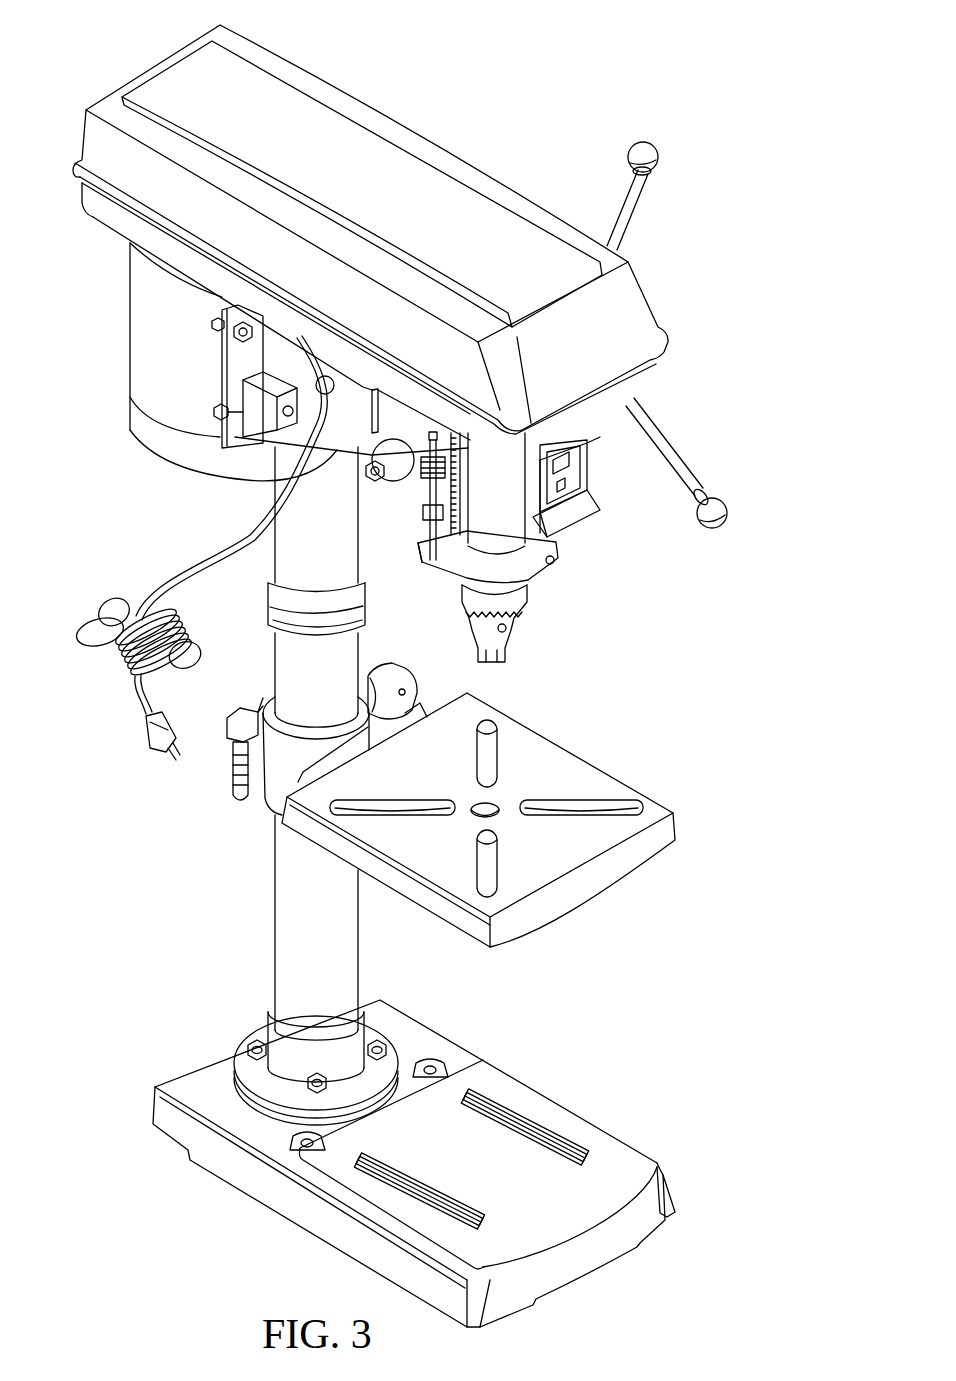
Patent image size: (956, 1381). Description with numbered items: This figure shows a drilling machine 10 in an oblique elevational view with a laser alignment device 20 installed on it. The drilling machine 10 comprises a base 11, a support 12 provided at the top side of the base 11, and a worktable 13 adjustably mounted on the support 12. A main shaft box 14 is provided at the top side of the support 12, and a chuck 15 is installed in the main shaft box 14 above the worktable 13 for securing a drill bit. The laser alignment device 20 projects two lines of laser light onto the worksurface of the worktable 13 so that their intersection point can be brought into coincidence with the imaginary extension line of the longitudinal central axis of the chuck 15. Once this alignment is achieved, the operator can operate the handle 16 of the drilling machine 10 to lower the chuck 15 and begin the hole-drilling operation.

The drill press 10 is at (406, 672).
The base 11 is at (265, 1190).
The column 12 is at (298, 568).
The table 13 is at (597, 847).
The switch 14 is at (563, 497).
The chuck 15 is at (493, 632).
The feed handle 16 is at (657, 448).
The depth stop 20 is at (441, 578).